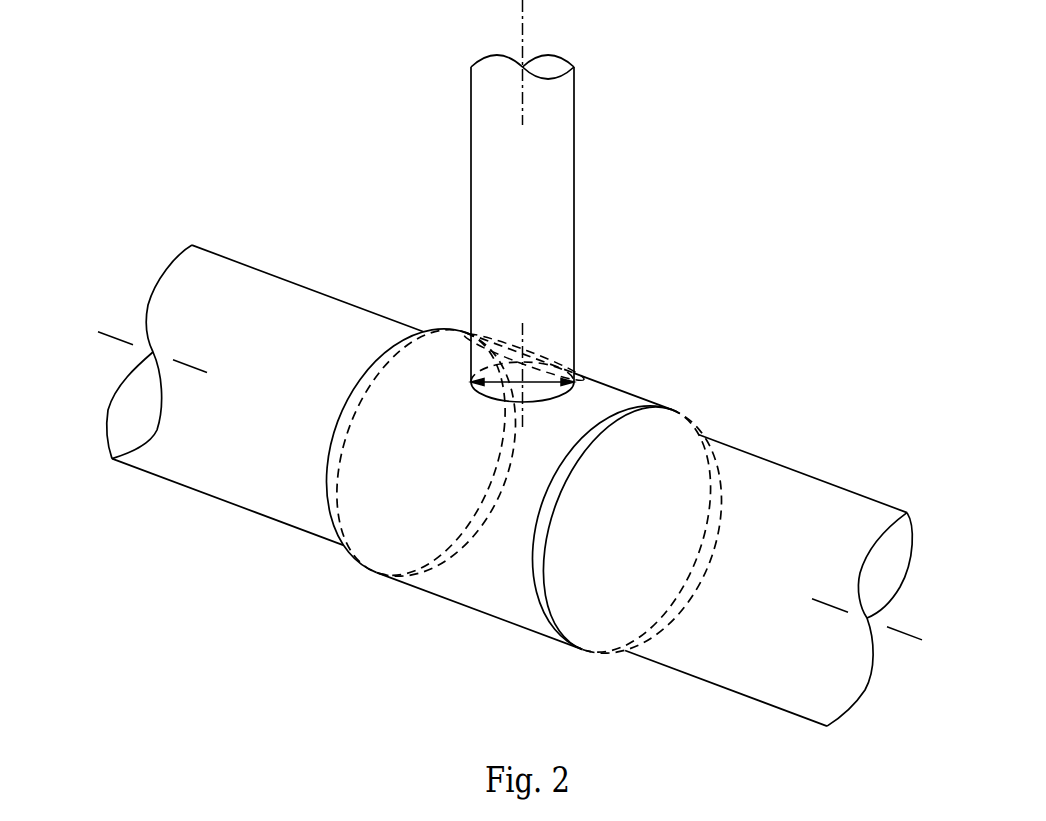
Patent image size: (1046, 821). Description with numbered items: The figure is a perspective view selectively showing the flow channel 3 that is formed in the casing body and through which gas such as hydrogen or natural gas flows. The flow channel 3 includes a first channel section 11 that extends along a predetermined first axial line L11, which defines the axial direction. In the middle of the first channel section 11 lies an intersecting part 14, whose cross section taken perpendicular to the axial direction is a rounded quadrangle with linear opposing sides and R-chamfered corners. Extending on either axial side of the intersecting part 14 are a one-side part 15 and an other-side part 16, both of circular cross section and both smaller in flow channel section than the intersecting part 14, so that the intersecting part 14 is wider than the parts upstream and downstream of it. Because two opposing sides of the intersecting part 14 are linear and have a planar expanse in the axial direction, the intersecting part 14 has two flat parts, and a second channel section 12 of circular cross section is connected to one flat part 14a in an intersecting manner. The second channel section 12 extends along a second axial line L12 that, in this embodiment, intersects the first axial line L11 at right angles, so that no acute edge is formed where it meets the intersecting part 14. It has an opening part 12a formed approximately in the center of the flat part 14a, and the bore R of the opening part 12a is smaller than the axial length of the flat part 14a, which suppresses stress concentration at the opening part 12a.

The flow channel 3 is at (510, 390).
The first channel section 11 is at (528, 630).
The second channel section 12 is at (573, 193).
The opening part 12a is at (600, 357).
The intersecting part 14 is at (468, 608).
The flat part 14a is at (447, 362).
The one-side part 15 is at (788, 468).
The other-side part 16 is at (297, 284).
The bore of the opening part R is at (530, 383).
The first axial line L11 is at (133, 343).
The second axial line L12 is at (522, 27).